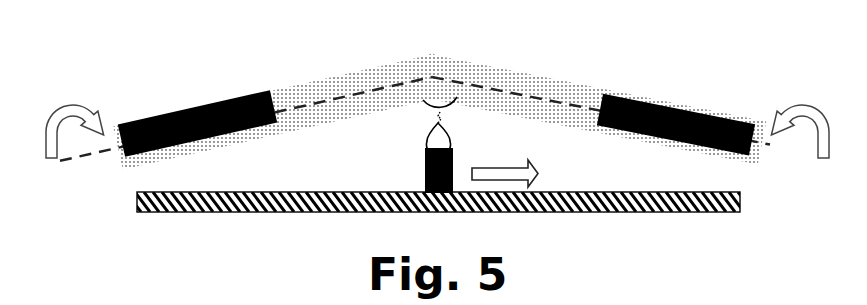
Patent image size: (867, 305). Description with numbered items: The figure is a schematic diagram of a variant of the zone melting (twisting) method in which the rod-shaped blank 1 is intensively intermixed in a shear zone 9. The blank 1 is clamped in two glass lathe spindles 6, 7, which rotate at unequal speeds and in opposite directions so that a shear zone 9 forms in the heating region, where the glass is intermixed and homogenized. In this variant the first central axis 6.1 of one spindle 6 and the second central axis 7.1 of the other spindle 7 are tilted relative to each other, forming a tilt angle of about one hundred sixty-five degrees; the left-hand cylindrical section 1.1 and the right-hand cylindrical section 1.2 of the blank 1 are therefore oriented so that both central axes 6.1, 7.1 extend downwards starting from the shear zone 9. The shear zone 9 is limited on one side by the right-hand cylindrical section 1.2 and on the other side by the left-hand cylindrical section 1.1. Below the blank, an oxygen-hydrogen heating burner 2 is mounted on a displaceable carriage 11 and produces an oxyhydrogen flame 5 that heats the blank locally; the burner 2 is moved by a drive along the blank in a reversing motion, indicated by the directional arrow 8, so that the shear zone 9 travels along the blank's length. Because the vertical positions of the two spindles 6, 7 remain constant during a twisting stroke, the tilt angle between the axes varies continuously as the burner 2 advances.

The rod-shaped blank 1 is at (415, 88).
The left-hand cylindrical section 1.1 is at (313, 97).
The right-hand cylindrical section 1.2 is at (580, 86).
The oxygen-hydrogen heating burner 2 is at (426, 161).
The oxyhydrogen flame 5 is at (440, 128).
The glass lathe spindle 6 is at (218, 108).
The first central axis 6.1 is at (77, 160).
The glass lathe spindle 7 is at (672, 118).
The second central axis 7.1 is at (792, 155).
The directional arrow 8 is at (497, 180).
The shear zone 9 is at (432, 72).
The displaceable carriage 11 is at (313, 207).